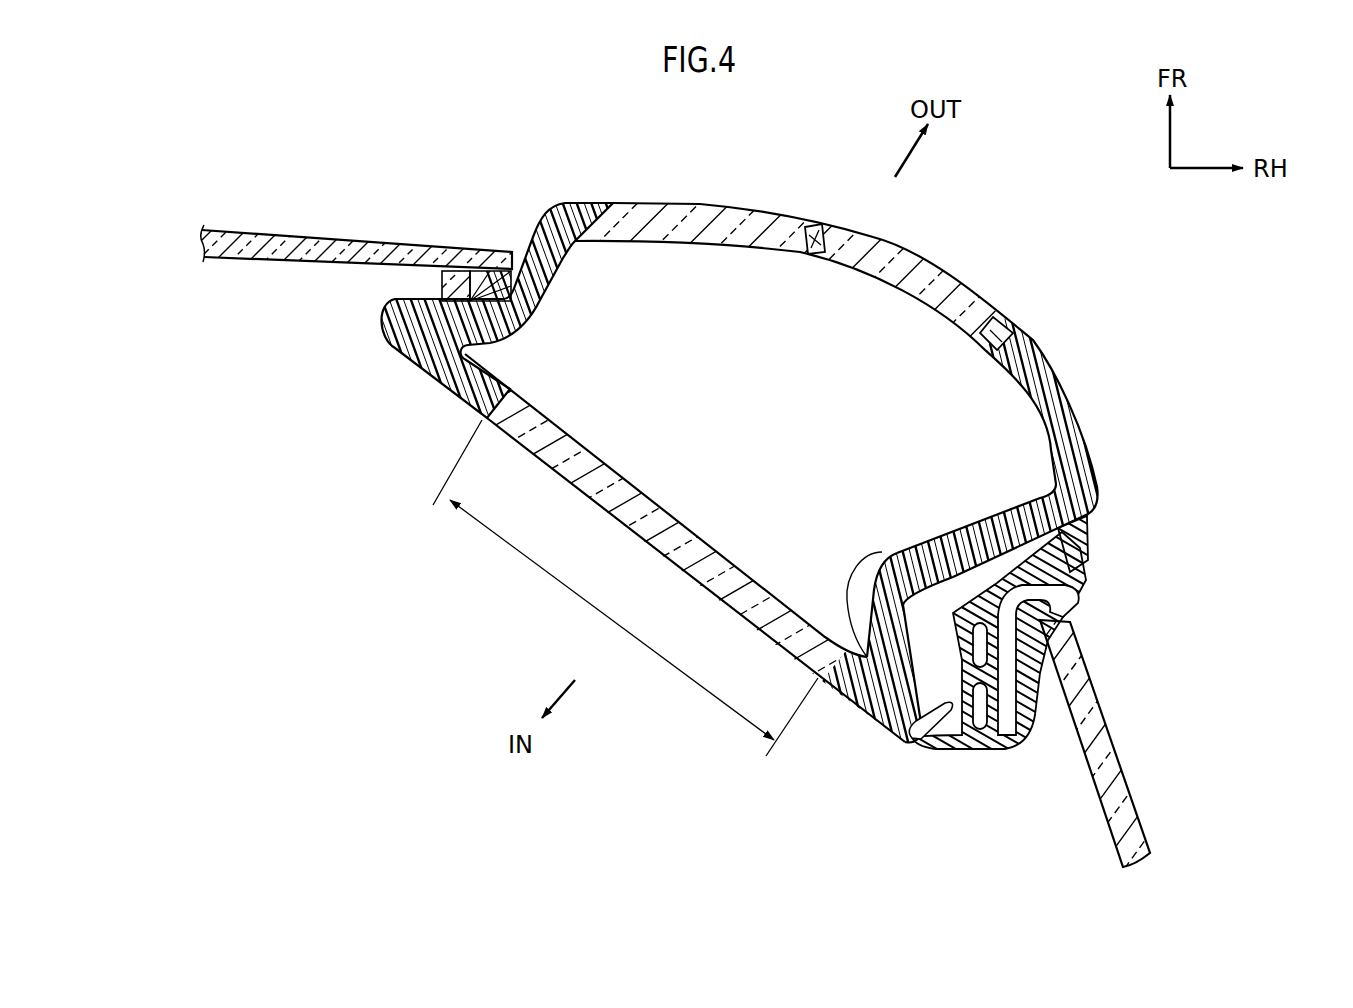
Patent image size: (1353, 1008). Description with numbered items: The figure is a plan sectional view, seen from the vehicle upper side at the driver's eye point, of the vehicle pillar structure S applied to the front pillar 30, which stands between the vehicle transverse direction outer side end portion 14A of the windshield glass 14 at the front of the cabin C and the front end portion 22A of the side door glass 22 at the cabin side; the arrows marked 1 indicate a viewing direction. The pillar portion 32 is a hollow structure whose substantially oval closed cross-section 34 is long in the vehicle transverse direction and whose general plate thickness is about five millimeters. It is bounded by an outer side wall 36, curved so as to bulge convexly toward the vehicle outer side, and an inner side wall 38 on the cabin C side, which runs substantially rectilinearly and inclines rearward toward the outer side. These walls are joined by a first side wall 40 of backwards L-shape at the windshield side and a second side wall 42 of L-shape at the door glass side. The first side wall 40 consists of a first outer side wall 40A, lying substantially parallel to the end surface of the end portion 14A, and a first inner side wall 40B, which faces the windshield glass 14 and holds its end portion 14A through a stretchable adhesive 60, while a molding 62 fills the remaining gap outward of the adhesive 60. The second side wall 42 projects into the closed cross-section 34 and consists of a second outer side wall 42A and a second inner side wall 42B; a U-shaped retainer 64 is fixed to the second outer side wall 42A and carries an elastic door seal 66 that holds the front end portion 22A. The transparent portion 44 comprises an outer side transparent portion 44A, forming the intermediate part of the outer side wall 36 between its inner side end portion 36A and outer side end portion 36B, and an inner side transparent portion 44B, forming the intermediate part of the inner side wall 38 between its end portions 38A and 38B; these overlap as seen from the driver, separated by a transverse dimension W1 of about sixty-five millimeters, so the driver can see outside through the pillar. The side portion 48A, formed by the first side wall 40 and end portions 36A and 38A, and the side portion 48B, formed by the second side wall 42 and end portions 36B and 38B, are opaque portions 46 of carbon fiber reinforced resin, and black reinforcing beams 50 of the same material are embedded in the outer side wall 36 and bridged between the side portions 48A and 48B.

The section line 1 is at (817, 134).
The windshield glass 14 is at (250, 228).
The vehicle transverse direction outer side end portion 14A is at (468, 250).
The side door glass 22 is at (1140, 815).
The front end portion 22A is at (1074, 630).
The front pillar 30 is at (791, 437).
The pillar portion 32 is at (791, 437).
The closed cross-section 34 is at (786, 415).
The outer side wall 36 is at (1038, 335).
The vehicle transverse direction inner side end portion 36A is at (598, 203).
The vehicle transverse direction outer side end portion 36B is at (1083, 410).
The inner side wall 38 is at (436, 408).
The vehicle transverse direction inner side end portion 38A is at (398, 356).
The vehicle transverse direction outer side end portion 38B is at (858, 715).
The first side wall 40 is at (645, 308).
The first outer side wall 40A is at (560, 292).
The first inner side wall 40B is at (490, 345).
The second side wall 42 is at (802, 482).
The second outer side wall 42A is at (895, 548).
The second inner side wall 42B is at (855, 628).
The transparent portion 44 is at (689, 532).
The outer side transparent portion 44A is at (950, 262).
The inner side transparent portion 44B is at (690, 466).
The opaque portions 46 is at (785, 366).
The side portion 48A is at (550, 210).
The side portion 48B is at (985, 512).
The reinforcing beams 50 is at (824, 222).
The adhesive 60 is at (441, 285).
The molding 62 is at (511, 271).
The retainer 64 is at (1089, 548).
The door seal 66 is at (1006, 752).
The vehicle pillar structure S is at (1165, 325).
The cabin C is at (490, 642).
The transverse dimension W1 is at (650, 655).